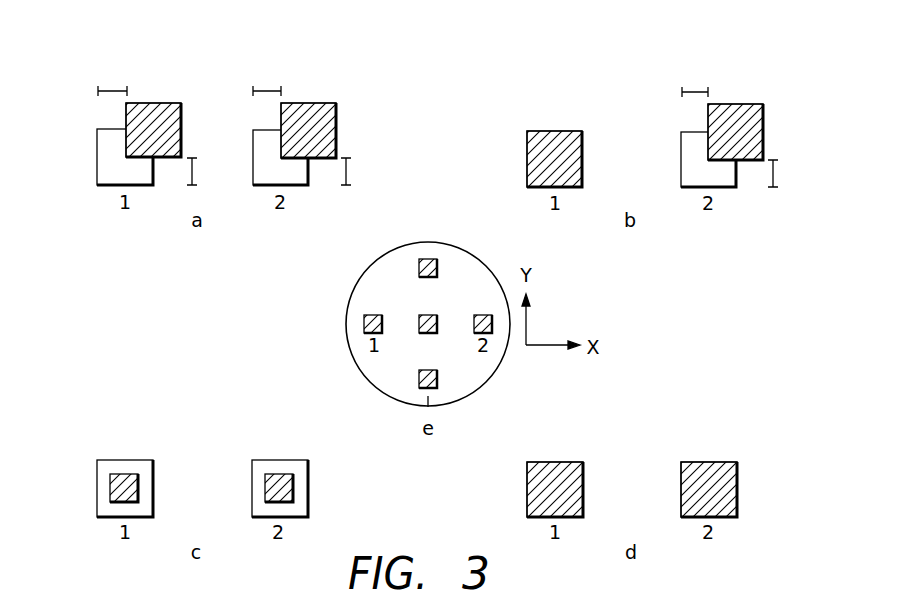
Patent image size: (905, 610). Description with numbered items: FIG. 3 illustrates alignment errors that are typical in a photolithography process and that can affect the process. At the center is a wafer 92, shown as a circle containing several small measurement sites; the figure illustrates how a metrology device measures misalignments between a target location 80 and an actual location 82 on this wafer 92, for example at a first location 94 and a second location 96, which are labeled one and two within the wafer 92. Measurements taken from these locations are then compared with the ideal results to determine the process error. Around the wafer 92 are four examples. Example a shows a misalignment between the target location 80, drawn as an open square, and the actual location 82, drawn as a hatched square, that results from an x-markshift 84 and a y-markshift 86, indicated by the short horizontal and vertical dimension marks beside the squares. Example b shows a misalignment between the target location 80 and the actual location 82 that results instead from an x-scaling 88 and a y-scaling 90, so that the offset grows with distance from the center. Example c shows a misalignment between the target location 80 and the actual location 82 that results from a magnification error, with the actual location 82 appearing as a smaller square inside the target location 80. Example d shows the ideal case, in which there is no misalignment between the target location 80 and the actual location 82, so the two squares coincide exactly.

The target location 80 is at (97, 160).
The actual location 82 is at (165, 100).
The x-markshift 84 is at (112, 88).
The y-markshift 86 is at (195, 172).
The x-scaling 88 is at (695, 88).
The y-scaling 90 is at (776, 173).
The wafer 92 is at (346, 322).
The first location 94 is at (378, 315).
The second location 96 is at (480, 315).